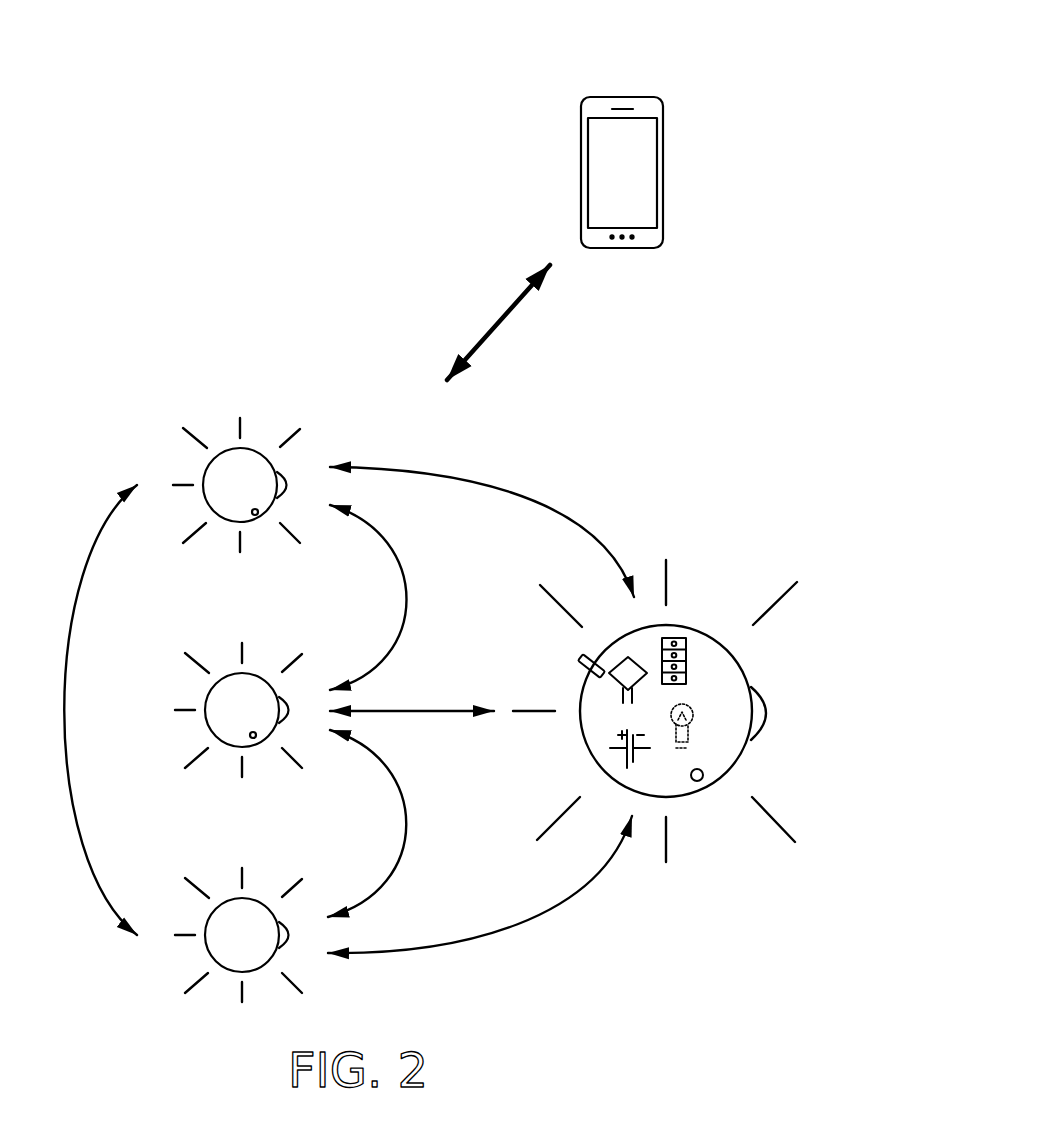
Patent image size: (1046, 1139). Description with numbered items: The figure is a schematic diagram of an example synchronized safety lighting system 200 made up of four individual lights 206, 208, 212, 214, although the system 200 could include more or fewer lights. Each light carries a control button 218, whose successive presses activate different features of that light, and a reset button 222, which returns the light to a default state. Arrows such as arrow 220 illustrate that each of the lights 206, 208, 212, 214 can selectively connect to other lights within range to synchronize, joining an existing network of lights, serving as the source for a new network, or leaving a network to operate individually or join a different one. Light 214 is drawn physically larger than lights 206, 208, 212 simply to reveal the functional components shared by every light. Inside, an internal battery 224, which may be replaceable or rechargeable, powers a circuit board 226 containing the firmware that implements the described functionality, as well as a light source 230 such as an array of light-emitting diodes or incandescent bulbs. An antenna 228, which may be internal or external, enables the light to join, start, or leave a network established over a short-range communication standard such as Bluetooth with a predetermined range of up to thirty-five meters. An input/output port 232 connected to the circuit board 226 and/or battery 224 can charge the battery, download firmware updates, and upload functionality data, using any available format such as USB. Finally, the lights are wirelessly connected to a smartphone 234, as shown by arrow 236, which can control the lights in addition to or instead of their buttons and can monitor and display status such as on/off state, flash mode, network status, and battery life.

The synchronized safety lighting system 200 is at (175, 231).
The light 206 is at (259, 490).
The light 208 is at (230, 672).
The light 212 is at (232, 897).
The light 214 is at (680, 626).
The control button 218 is at (285, 477).
The arrow 220 is at (479, 477).
The reset button 222 is at (257, 514).
The battery 224 is at (648, 748).
The circuit board 226 is at (686, 655).
The antenna 228 is at (621, 661).
The light source 230 is at (697, 723).
The port 232 is at (586, 665).
The smartphone 234 is at (602, 97).
The arrow 236 is at (502, 310).